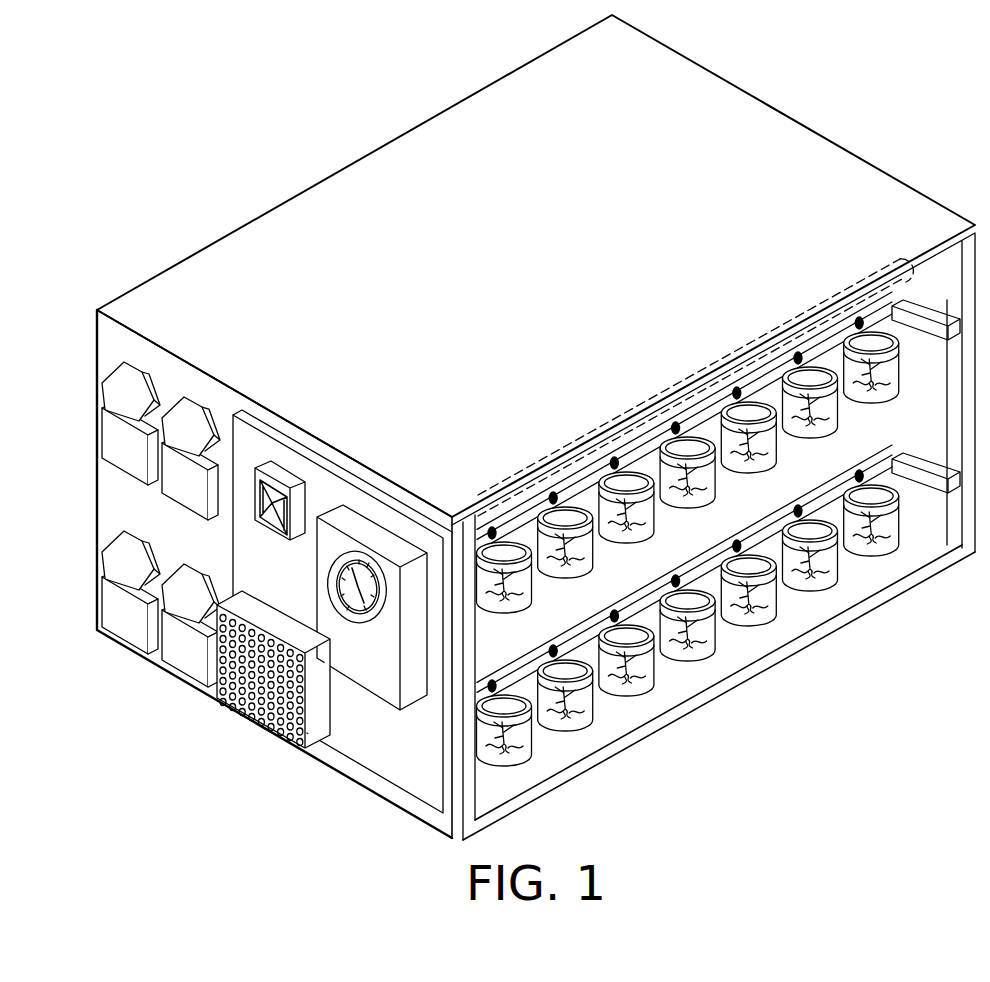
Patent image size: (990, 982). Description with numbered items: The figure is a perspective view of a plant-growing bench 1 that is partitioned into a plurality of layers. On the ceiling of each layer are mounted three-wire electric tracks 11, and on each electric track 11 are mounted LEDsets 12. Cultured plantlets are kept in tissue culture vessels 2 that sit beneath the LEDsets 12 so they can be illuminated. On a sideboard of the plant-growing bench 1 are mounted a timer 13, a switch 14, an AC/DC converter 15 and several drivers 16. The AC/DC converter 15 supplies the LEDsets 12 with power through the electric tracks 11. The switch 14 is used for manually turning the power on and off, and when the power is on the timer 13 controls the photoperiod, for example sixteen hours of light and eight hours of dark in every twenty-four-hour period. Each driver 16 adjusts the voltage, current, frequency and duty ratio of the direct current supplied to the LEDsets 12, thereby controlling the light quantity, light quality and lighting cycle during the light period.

The plant-growing bench 1 is at (383, 172).
The tissue culture vessel 2 is at (698, 668).
The 3-wire electric track 11 is at (597, 428).
The LEDset 12 is at (820, 326).
The timer 13 is at (356, 557).
The switch 14 is at (263, 463).
The AC/DC converter 15 is at (252, 700).
The driver 16 is at (108, 436).